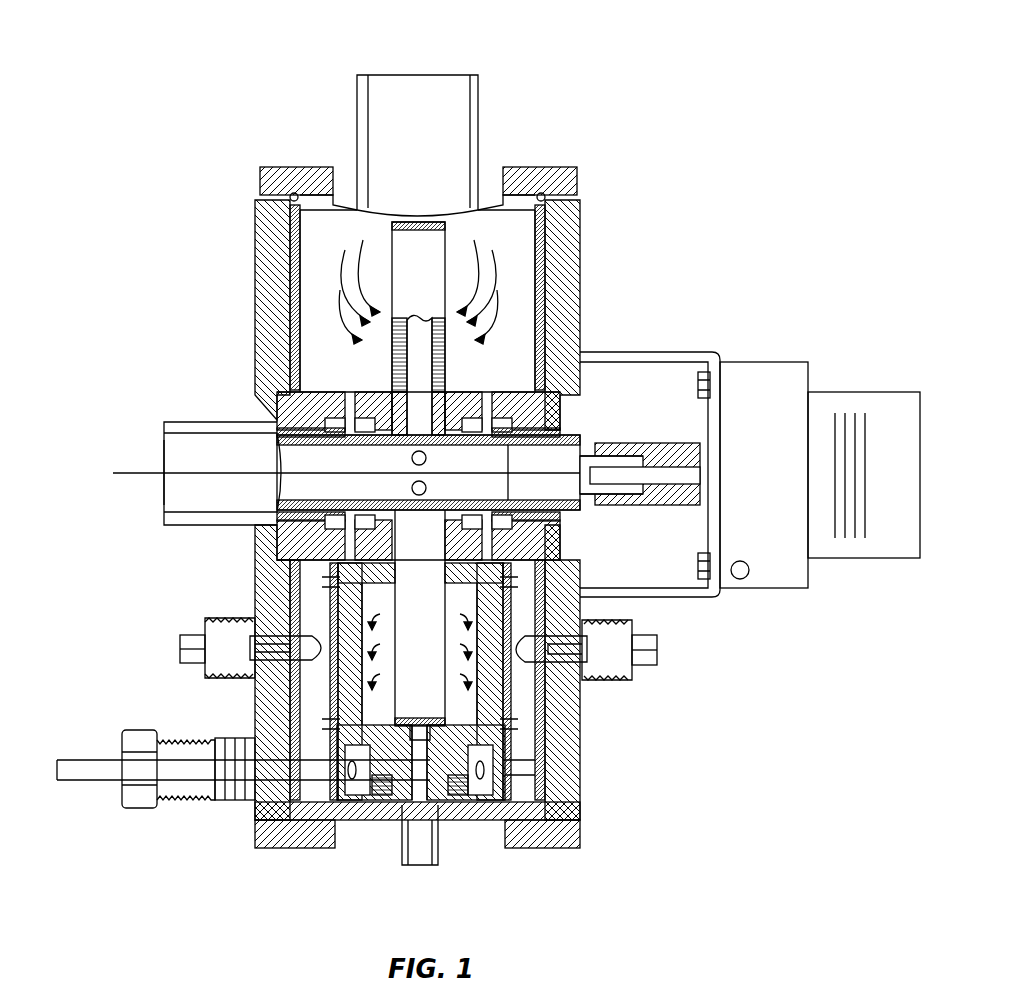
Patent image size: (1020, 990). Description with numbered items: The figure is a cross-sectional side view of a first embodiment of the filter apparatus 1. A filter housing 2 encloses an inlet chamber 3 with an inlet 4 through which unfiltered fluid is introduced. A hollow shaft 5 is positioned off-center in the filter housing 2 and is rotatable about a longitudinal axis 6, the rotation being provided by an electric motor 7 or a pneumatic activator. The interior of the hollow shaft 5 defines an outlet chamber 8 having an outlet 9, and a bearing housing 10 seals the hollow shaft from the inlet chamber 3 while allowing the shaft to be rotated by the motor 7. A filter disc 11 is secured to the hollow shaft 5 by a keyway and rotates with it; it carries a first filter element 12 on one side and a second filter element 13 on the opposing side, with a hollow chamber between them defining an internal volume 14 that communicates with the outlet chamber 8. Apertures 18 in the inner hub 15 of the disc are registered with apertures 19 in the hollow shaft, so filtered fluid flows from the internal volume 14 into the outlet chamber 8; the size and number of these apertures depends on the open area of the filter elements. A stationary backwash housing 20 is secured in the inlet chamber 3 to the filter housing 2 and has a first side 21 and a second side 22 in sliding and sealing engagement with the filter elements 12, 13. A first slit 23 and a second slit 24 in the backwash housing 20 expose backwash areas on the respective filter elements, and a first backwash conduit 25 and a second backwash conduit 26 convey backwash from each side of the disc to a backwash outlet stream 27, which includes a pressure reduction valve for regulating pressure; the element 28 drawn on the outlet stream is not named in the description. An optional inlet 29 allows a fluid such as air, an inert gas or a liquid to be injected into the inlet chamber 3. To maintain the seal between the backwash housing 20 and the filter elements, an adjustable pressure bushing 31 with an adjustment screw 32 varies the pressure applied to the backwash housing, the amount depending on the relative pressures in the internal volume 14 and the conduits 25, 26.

The filter apparatus 1 is at (706, 62).
The filter housing 2 is at (255, 250).
The inlet chamber 3 is at (322, 298).
The inlet 4 is at (424, 132).
The hollow shaft 5 is at (253, 462).
The longitudinal axis 6 is at (196, 470).
The electric motor 7 is at (772, 480).
The outlet chamber 8 is at (333, 484).
The outlet 9 is at (164, 462).
The bearing housing 10 is at (548, 420).
The filter disc 11 is at (392, 268).
The first filter element 12 is at (440, 380).
The second filter element 13 is at (398, 378).
The internal volume 14 is at (420, 330).
The inner hub 15 is at (390, 402).
The apertures 18 is at (446, 398).
The apertures 19 is at (426, 463).
The backwash housing 20 is at (476, 713).
The first side 21 is at (490, 790).
The second side 22 is at (350, 790).
The first slit 23 is at (462, 613).
The second slit 24 is at (312, 577).
The first backwash conduit 25 is at (467, 752).
The second backwash conduit 26 is at (372, 749).
The backwash outlet stream 27 is at (200, 782).
The nut 28 is at (138, 730).
The inlet 29 is at (418, 855).
The adjustable pressure bushing 31 is at (372, 607).
The adjustment screw 32 is at (632, 640).